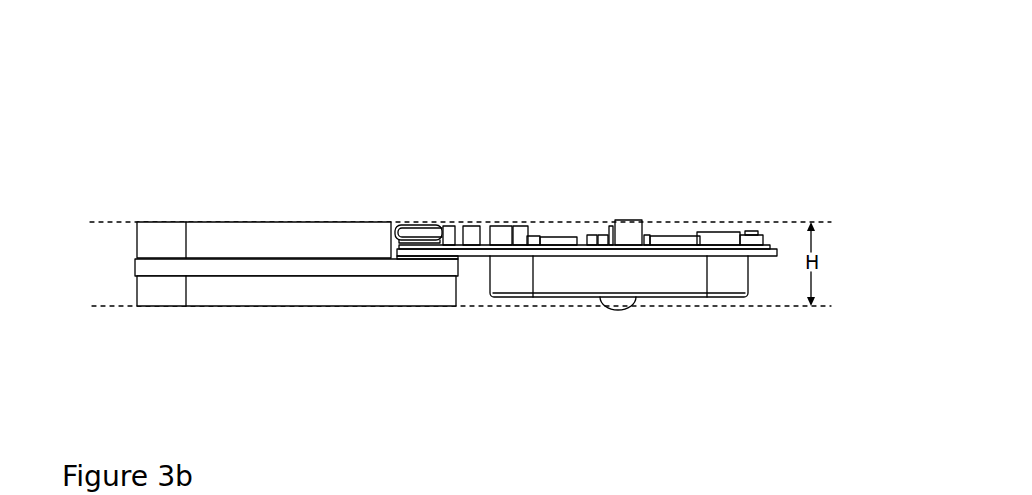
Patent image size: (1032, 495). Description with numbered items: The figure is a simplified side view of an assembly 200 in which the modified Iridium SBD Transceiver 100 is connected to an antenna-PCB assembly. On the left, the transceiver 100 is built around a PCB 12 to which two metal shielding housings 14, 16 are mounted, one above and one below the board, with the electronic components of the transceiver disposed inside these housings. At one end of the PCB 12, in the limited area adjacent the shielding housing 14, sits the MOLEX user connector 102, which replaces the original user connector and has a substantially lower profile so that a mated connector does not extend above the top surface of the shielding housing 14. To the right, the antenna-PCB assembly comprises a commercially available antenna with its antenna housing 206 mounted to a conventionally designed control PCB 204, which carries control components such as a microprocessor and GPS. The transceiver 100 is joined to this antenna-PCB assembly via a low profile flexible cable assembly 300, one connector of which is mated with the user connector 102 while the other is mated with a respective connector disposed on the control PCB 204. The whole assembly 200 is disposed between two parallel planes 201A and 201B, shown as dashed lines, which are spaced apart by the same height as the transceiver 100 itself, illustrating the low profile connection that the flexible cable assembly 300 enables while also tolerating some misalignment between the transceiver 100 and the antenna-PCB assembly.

The assembly 200 is at (563, 218).
The Iridium 9603/9603N SBD Transceiver 100 is at (296, 248).
The shielding housing 14 is at (260, 228).
The PCB 12 is at (342, 270).
The shielding housing 16 is at (292, 289).
The MOLEX 501591-2011 user connector 102 is at (417, 260).
The low profile flexible cable assembly 300 is at (423, 223).
The control PCB 204 is at (632, 255).
The antenna 206 is at (588, 273).
The parallel plane 201A is at (110, 222).
The parallel plane 201B is at (122, 307).